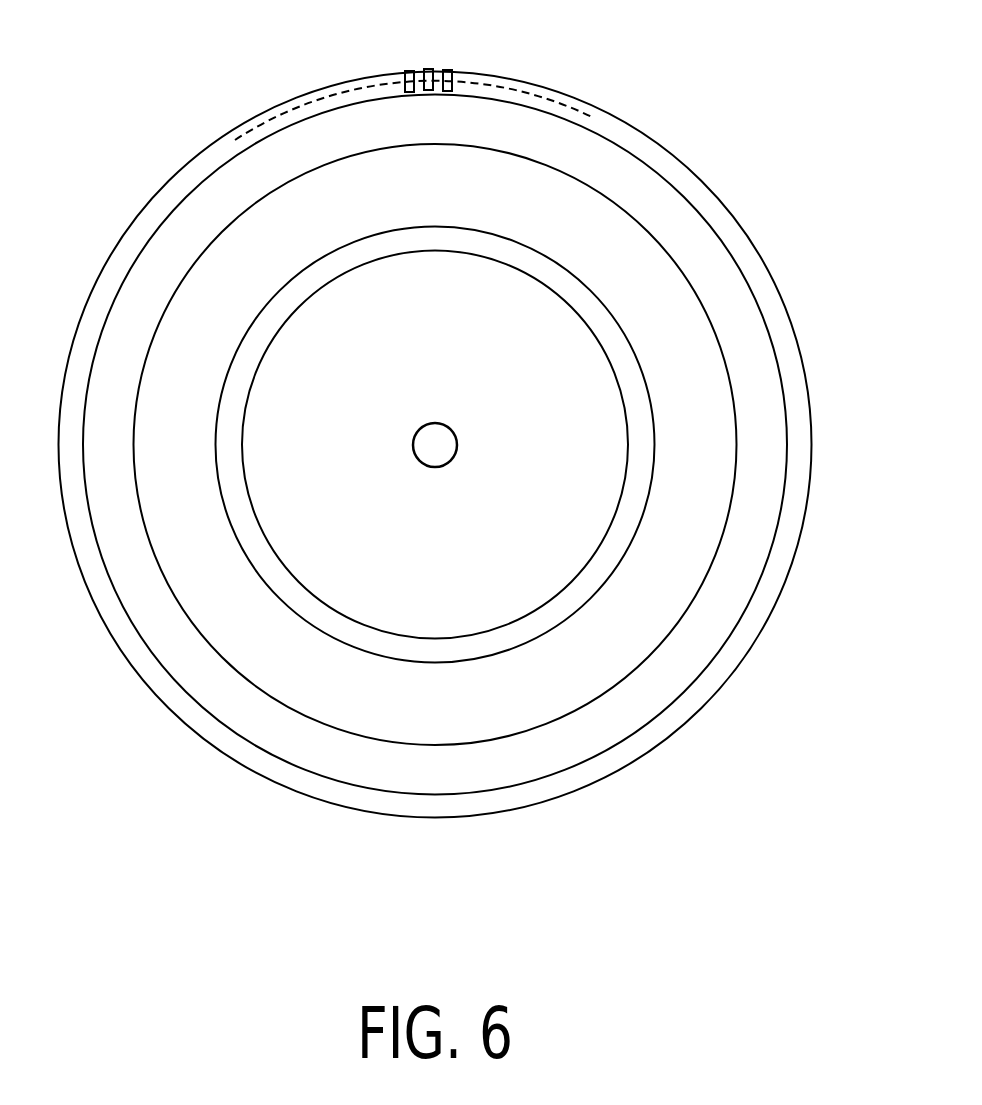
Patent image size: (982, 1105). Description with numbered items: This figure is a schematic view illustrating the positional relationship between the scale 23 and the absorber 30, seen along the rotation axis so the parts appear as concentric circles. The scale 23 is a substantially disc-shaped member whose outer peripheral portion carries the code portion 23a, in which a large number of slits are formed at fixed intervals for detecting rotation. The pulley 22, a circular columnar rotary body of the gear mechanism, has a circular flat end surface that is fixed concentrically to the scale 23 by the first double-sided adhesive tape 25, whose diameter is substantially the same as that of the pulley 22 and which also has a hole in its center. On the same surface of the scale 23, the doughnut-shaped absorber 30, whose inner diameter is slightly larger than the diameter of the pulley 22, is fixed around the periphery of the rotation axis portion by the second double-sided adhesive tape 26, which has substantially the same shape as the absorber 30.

The pulley 22 is at (332, 552).
The scale 23 is at (557, 89).
The code portion 23a is at (426, 70).
The first double-sided adhesive tape 25 is at (338, 285).
The second double-sided adhesive tape 26 is at (612, 692).
The absorber 30 is at (445, 703).